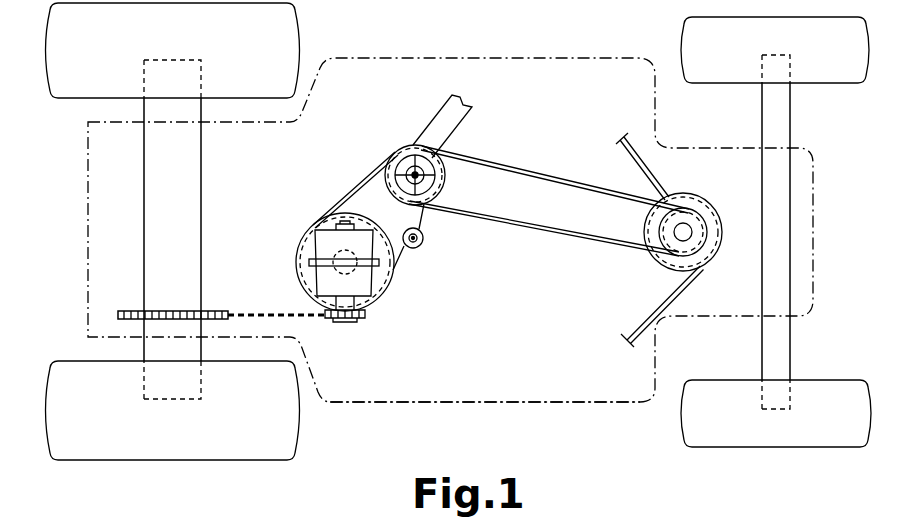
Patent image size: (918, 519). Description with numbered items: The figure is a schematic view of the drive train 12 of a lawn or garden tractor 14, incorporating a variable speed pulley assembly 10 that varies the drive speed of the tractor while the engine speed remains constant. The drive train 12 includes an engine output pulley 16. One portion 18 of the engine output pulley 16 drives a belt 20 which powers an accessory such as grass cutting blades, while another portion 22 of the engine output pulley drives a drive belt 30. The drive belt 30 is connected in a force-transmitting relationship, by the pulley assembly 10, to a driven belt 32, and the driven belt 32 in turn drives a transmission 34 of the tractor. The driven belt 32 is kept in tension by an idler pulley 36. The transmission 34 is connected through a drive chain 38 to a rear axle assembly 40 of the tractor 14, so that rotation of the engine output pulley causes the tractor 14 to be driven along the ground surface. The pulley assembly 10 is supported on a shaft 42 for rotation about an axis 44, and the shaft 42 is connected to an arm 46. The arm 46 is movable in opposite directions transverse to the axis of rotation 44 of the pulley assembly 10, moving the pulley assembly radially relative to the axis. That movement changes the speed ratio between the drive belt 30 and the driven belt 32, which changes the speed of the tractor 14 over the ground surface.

The variable speed pulley assembly 10 is at (434, 183).
The drive train 12 is at (549, 102).
The tractor 14 is at (404, 418).
The engine output pulley 16 is at (646, 278).
The one portion of the engine output pulley 18 is at (710, 200).
The belt 20 is at (634, 140).
The another portion of the engine output pulley 22 is at (648, 228).
The drive belt 30 is at (523, 222).
The driven belt 32 is at (363, 176).
The transmission 34 is at (330, 243).
The idler pulley 36 is at (421, 249).
The drive chain 38 is at (268, 313).
The rear axle assembly 40 is at (157, 203).
The shaft 42 is at (430, 166).
The axis 44 is at (420, 177).
The arm 46 is at (443, 120).